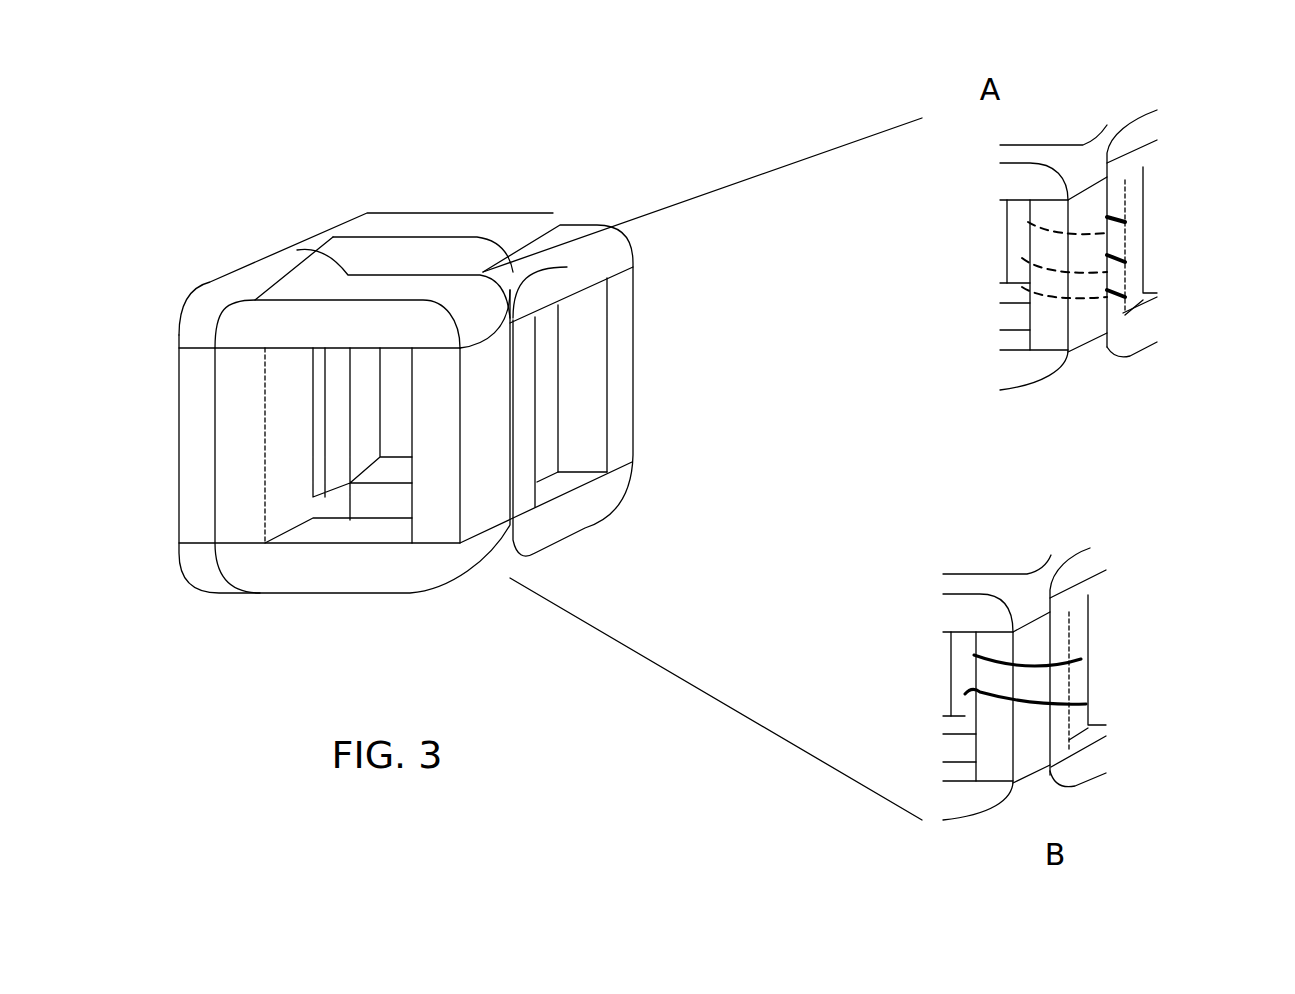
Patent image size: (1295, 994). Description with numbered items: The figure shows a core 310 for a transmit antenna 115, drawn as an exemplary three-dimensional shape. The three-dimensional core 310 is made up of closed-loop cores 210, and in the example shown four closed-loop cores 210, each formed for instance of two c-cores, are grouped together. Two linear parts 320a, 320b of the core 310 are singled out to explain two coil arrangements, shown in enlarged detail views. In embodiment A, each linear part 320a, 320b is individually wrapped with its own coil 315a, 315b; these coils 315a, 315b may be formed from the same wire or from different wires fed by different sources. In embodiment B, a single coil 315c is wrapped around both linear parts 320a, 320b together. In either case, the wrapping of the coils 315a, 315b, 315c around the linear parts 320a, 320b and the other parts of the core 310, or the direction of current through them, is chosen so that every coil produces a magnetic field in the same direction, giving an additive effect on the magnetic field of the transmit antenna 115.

The transmit antenna 115 is at (278, 75).
The closed-loop cores 210 is at (298, 258).
The three-dimensional core 310 is at (205, 290).
The coil 315a is at (1066, 238).
The coil 315b is at (1125, 259).
The coil 315c is at (1080, 662).
The linear part 320a is at (1024, 632).
The linear part 320b is at (1115, 307).